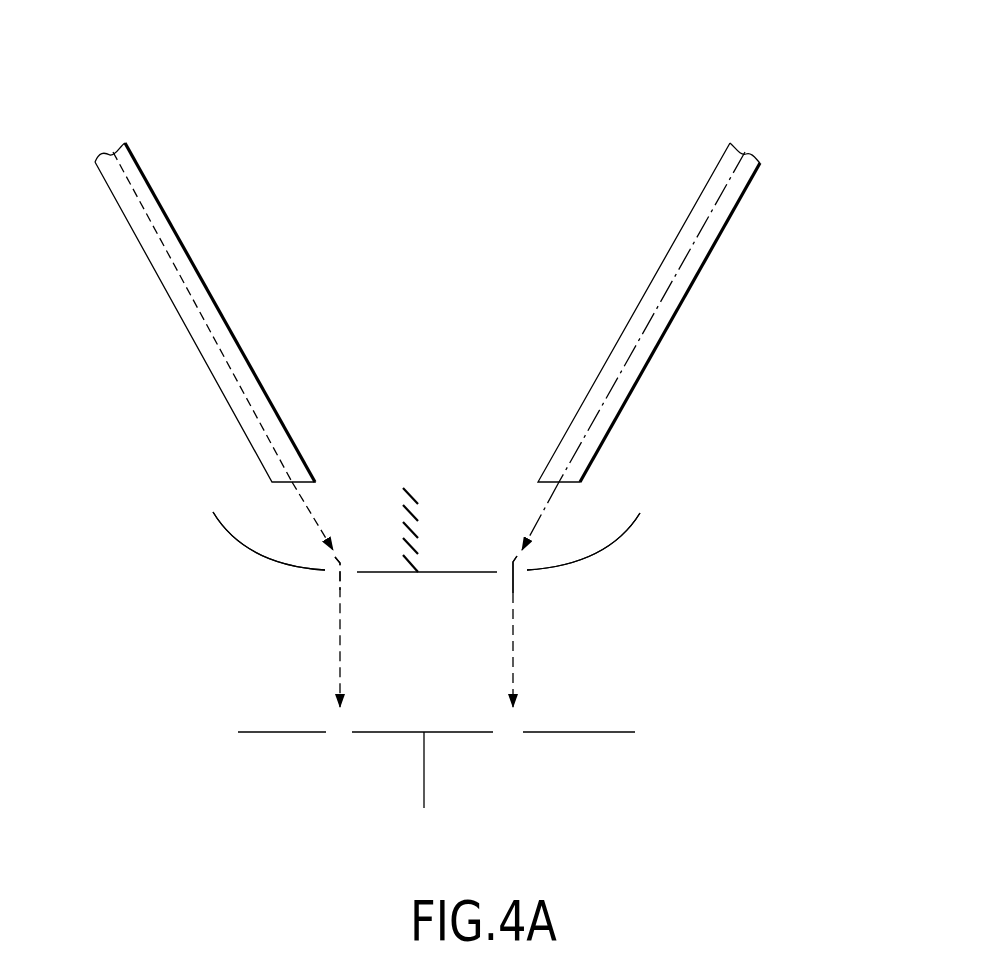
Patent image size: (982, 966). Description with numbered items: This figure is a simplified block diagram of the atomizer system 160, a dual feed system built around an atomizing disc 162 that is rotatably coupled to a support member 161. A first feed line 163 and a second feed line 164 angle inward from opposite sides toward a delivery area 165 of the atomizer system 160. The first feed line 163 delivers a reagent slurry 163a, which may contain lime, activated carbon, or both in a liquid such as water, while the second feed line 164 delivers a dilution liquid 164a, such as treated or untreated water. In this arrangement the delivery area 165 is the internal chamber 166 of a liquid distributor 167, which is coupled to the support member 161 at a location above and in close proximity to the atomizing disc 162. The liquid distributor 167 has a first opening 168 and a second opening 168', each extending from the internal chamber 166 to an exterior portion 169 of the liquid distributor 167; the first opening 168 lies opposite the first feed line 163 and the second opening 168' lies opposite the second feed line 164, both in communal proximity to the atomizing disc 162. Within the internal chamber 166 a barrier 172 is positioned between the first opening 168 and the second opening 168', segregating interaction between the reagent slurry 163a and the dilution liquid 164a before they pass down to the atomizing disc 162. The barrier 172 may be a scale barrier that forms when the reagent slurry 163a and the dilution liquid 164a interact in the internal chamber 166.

The atomizer system 160 is at (378, 97).
The support member 161 is at (427, 777).
The atomizing disc 162 is at (260, 732).
The first feed line 163 is at (633, 390).
The reagent slurry 163a is at (675, 278).
The second feed line 164 is at (190, 333).
The dilution liquid 164a is at (152, 222).
The delivery area 165 is at (207, 548).
The internal chamber 166 is at (228, 483).
The liquid distributor 167 is at (632, 533).
The first opening 168 is at (511, 496).
The second opening 168' is at (406, 494).
The exterior portion 169 is at (610, 543).
The barrier 172 is at (423, 520).